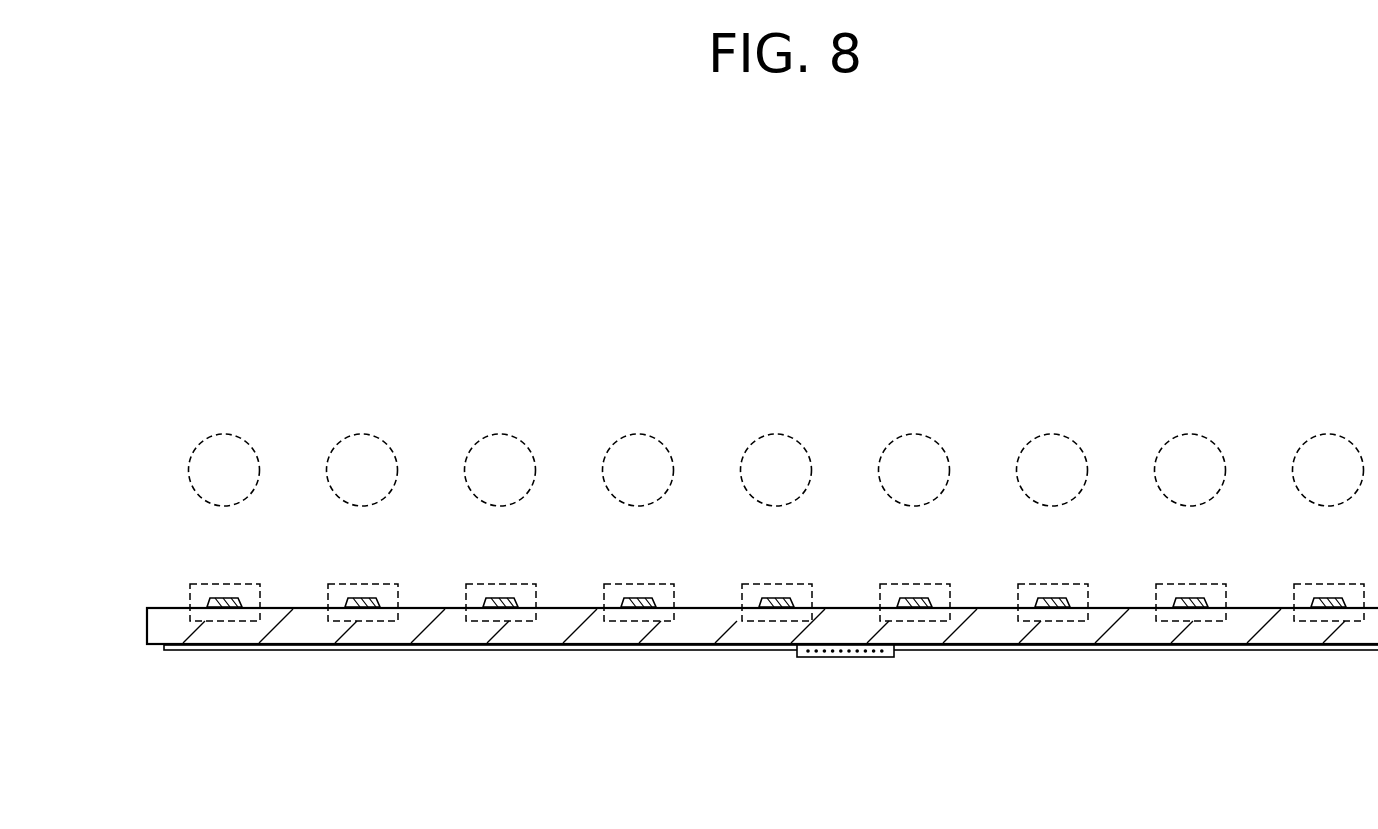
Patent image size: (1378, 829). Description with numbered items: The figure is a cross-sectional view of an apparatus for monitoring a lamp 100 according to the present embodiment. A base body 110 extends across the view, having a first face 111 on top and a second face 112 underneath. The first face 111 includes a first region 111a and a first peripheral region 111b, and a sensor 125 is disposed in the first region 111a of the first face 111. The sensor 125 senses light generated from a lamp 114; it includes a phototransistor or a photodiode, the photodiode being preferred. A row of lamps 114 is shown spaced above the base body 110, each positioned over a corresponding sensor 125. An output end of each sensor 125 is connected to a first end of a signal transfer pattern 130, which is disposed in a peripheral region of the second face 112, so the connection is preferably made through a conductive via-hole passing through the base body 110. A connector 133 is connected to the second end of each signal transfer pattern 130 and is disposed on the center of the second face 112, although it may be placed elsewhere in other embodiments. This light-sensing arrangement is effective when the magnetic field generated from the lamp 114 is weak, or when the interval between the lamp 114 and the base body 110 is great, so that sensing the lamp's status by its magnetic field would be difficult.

The apparatus for monitoring a lamp 100 is at (666, 374).
The base body 110 is at (147, 630).
The first face 111 is at (147, 607).
The first region 111a is at (208, 584).
The first peripheral region 111b is at (430, 595).
The second face 112 is at (177, 651).
The lamp 114 is at (222, 434).
The sensor 125 is at (241, 599).
The signal transfer pattern 130 is at (1045, 651).
The connector 133 is at (848, 657).